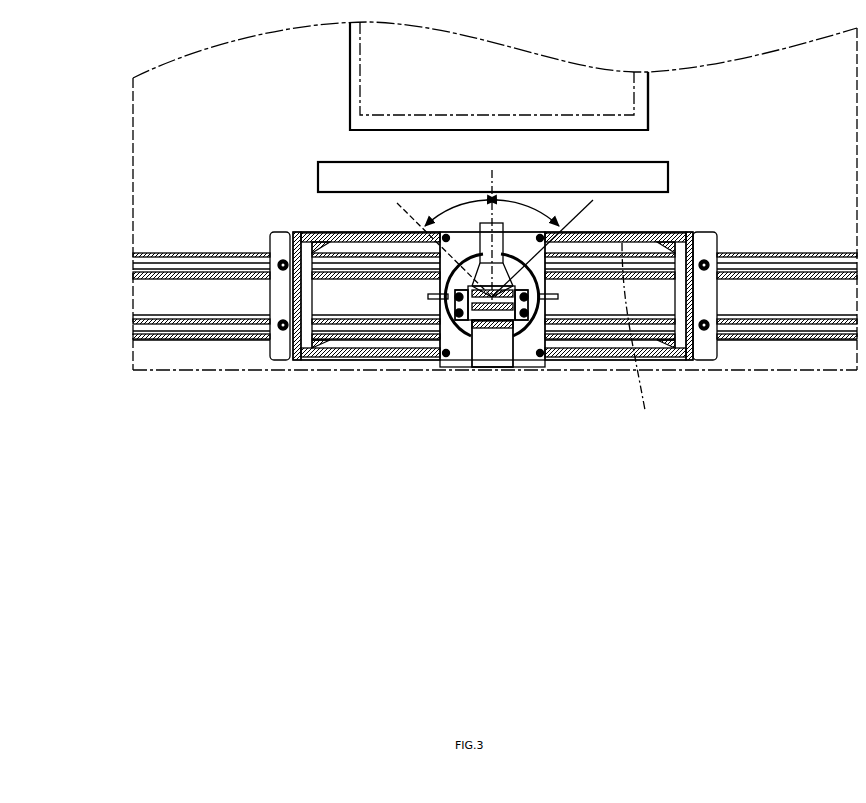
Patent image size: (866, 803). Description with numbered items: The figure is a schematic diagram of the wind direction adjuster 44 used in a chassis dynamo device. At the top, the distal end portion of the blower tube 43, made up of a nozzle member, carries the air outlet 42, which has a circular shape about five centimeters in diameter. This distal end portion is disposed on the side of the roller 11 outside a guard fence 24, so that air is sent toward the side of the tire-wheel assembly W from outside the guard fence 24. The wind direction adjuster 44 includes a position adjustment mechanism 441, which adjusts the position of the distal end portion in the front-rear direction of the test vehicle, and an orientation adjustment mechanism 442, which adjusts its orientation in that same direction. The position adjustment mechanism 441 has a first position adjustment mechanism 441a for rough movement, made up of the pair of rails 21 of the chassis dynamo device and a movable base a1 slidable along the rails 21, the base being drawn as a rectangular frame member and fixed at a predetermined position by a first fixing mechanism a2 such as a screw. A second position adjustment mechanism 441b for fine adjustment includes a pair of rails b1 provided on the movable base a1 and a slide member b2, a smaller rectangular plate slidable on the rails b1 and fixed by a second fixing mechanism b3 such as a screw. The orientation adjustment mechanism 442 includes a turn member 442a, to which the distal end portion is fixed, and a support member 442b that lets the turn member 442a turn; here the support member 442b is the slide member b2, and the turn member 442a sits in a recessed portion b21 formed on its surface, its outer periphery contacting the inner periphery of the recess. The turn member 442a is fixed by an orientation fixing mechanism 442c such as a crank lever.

The roller 11 is at (350, 74).
The tire-wheel assembly W is at (634, 90).
The pair of rails 21 is at (825, 312).
The guard fence 24 is at (668, 178).
The air outlet 42 is at (500, 222).
The blower tube 43 is at (522, 368).
The wind direction adjuster 44 is at (346, 402).
The position adjustment mechanism 441 is at (330, 396).
The first position adjustment mechanism 441a is at (250, 225).
The second position adjustment mechanism 441b is at (488, 402).
The orientation adjustment mechanism 442 is at (570, 362).
The turn member 442a is at (448, 362).
The support member 442b is at (430, 362).
The orientation fixing mechanism 442c is at (428, 297).
The movable base a1 is at (268, 362).
The first fixing mechanism a2 is at (276, 236).
The pair of rails b1 is at (636, 335).
The slide member b2 is at (430, 362).
The recessed portion b21 is at (533, 368).
The second fixing mechanism b3 is at (430, 230).